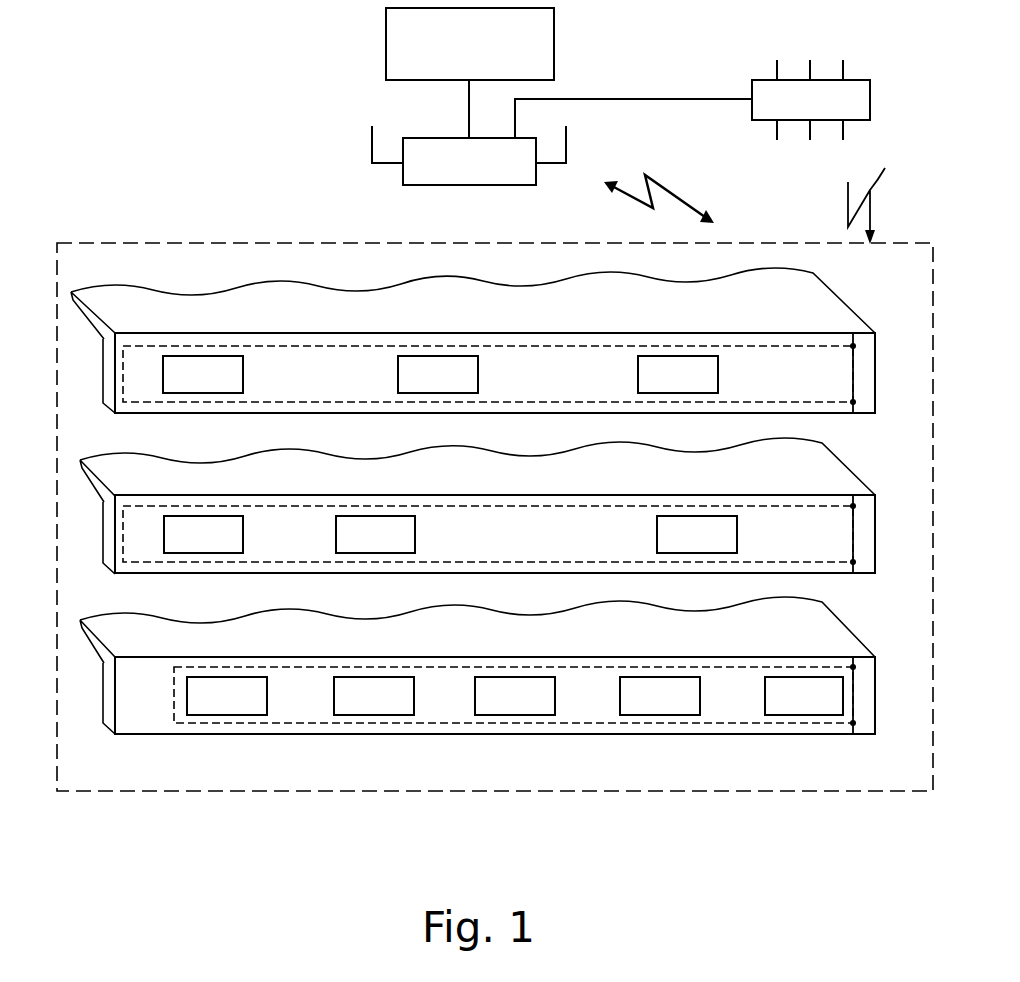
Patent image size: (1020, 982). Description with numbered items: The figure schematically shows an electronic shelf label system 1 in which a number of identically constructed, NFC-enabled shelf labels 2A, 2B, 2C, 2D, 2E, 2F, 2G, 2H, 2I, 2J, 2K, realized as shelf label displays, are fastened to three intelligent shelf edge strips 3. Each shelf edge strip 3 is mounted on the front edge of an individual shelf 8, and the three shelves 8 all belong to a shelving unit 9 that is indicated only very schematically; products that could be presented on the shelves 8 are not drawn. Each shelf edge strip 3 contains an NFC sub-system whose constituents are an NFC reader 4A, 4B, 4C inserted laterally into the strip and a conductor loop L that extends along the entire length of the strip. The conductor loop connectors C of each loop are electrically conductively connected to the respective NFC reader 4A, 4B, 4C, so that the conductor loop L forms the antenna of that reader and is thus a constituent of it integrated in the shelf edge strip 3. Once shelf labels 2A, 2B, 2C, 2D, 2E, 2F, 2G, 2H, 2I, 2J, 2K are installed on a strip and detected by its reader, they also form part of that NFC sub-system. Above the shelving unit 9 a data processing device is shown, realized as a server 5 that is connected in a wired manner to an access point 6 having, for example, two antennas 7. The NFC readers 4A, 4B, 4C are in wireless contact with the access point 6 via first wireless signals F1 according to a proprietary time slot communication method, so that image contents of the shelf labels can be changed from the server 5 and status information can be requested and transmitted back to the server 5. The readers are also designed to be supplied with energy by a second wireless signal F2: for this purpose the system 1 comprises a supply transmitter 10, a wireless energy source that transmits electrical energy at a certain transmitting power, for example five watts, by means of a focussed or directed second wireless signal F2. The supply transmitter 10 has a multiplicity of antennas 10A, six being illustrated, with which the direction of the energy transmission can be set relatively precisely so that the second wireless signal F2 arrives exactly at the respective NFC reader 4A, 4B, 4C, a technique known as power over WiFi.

The shelf label system 1 is at (255, 92).
The shelf label 2A is at (232, 368).
The shelf label 2B is at (467, 368).
The shelf label 2C is at (700, 365).
The shelf label 2D is at (230, 528).
The shelf label 2E is at (398, 528).
The shelf label 2F is at (728, 528).
The shelf label 2G is at (210, 709).
The shelf label 2H is at (357, 709).
The shelf label 2I is at (501, 709).
The shelf label 2J is at (644, 709).
The shelf label 2K is at (787, 709).
The shelf edge strip 3 is at (108, 692).
The NFC reader 4A is at (865, 378).
The NFC reader 4B is at (865, 540).
The NFC reader 4C is at (865, 698).
The server 5 is at (535, 35).
The access point 6 is at (418, 138).
The antenna 7 is at (624, 150).
The shelf 8 is at (85, 630).
The shelving unit 9 is at (200, 797).
The supply transmitter 10 is at (768, 88).
The antennas 10A is at (843, 136).
The conductor loop connectors C is at (896, 729).
The conductor loop L is at (746, 762).
The first wireless signals F1 is at (667, 192).
The second wireless signal F2 is at (875, 192).